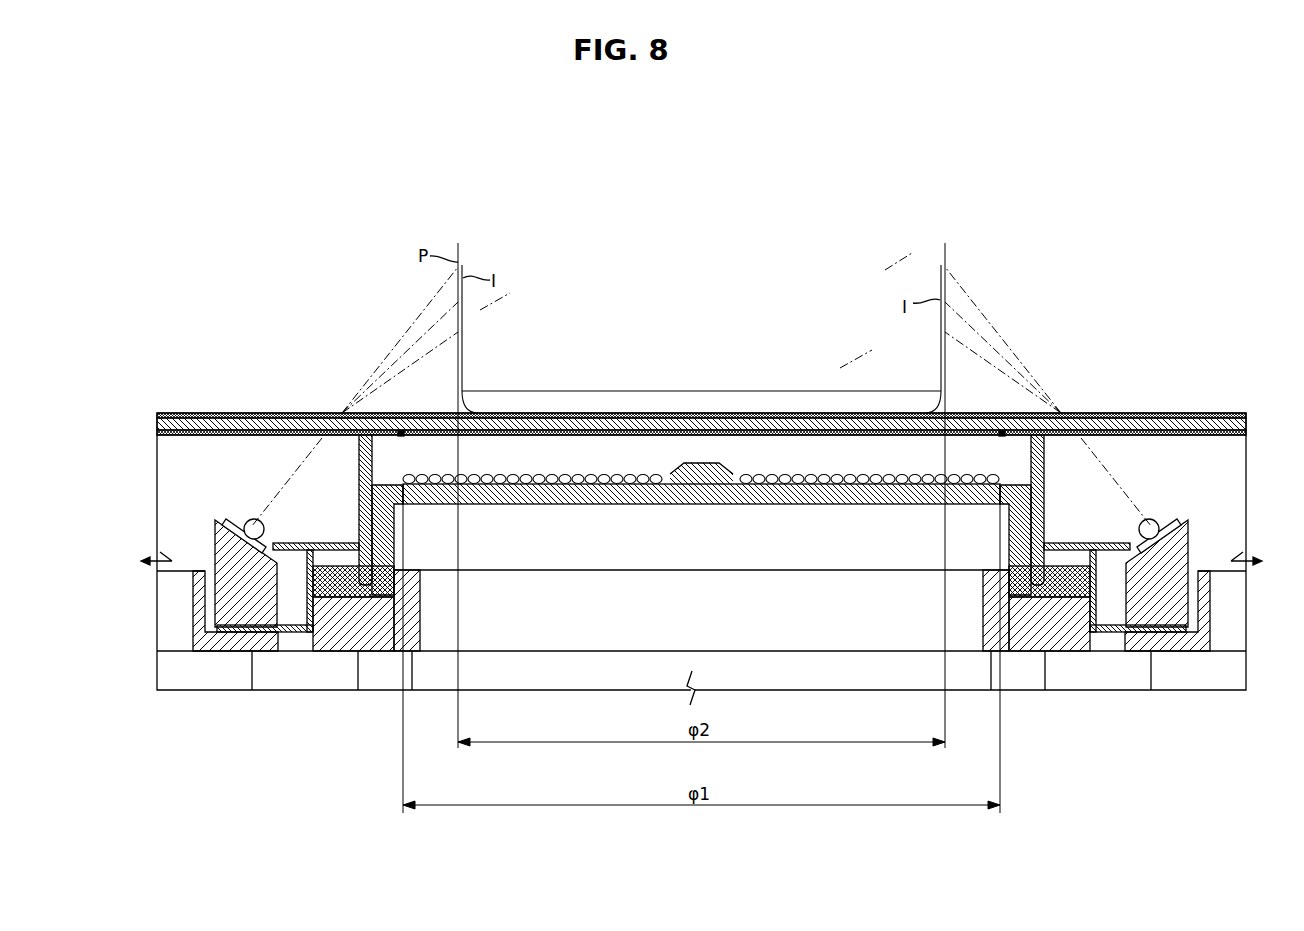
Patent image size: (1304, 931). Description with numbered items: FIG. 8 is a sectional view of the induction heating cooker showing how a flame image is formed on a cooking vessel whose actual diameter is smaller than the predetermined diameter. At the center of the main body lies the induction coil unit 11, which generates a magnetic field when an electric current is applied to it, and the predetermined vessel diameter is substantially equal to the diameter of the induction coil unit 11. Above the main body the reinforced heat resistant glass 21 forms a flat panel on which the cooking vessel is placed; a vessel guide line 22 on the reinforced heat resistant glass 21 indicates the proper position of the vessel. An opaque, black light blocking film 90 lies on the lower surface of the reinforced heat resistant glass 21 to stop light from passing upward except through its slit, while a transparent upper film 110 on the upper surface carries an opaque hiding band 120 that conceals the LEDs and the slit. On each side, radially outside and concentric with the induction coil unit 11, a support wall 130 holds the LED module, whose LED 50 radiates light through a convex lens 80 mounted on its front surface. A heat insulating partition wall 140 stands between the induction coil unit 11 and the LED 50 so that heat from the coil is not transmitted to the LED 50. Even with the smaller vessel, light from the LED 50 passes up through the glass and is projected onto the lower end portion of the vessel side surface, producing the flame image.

The induction coil unit 11 is at (512, 486).
The reinforced heat resistant glass 21 is at (157, 427).
The vessel guide line 22 is at (401, 436).
The LED 50 is at (233, 520).
The convex lens 80 is at (250, 519).
The light blocking film 90 is at (166, 436).
The upper film 110 is at (163, 417).
The hiding band 120 is at (300, 413).
The support wall 130 is at (228, 595).
The heat insulating partition wall 140 is at (359, 516).